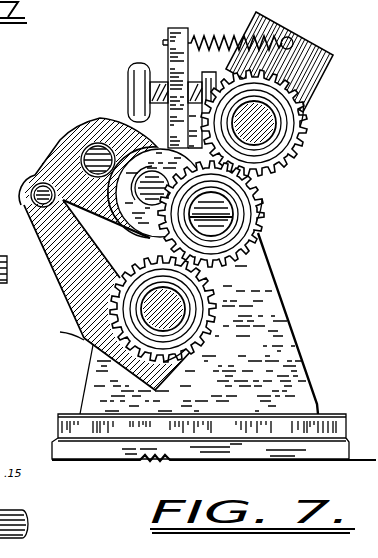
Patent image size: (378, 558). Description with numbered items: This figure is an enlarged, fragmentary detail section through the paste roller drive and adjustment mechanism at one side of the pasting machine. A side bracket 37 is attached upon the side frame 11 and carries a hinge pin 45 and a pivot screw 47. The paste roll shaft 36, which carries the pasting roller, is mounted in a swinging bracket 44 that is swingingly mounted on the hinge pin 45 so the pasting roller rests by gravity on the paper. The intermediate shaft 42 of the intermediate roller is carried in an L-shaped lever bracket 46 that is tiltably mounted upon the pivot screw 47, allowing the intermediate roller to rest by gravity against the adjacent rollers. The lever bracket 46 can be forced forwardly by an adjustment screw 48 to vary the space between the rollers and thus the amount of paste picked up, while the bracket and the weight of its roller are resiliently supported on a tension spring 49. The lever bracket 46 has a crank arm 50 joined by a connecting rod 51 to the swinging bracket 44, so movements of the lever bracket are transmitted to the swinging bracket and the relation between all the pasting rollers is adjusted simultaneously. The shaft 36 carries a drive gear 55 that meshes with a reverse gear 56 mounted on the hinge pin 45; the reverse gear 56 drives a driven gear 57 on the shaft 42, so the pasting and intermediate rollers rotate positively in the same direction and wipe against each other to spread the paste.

The side frame 11 is at (327, 424).
The paste roll shaft 36 is at (214, 312).
The side bracket 37 is at (270, 330).
The intermediate shaft 42 is at (266, 127).
The swinging bracket 44 is at (78, 331).
The hinge pin 45 is at (226, 233).
The L-shaped lever bracket 46 is at (312, 77).
The pivot screw 47 is at (147, 196).
The adjustment screw 48 is at (128, 69).
The tension spring 49 is at (242, 36).
The crank arm 50 is at (45, 166).
The connecting rod 51 is at (85, 284).
The drive gear 55 is at (191, 346).
The reverse gear 56 is at (261, 208).
The driven gear 57 is at (307, 117).